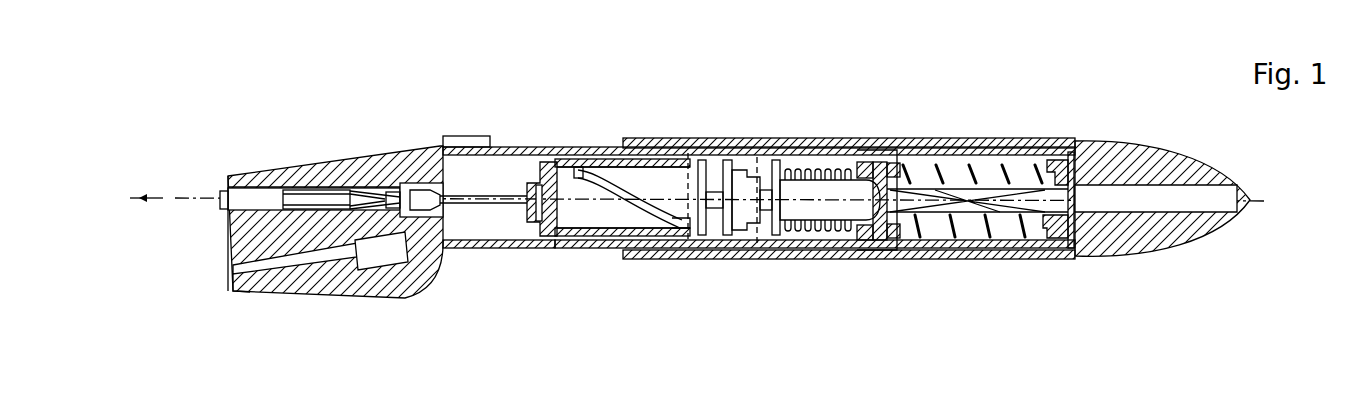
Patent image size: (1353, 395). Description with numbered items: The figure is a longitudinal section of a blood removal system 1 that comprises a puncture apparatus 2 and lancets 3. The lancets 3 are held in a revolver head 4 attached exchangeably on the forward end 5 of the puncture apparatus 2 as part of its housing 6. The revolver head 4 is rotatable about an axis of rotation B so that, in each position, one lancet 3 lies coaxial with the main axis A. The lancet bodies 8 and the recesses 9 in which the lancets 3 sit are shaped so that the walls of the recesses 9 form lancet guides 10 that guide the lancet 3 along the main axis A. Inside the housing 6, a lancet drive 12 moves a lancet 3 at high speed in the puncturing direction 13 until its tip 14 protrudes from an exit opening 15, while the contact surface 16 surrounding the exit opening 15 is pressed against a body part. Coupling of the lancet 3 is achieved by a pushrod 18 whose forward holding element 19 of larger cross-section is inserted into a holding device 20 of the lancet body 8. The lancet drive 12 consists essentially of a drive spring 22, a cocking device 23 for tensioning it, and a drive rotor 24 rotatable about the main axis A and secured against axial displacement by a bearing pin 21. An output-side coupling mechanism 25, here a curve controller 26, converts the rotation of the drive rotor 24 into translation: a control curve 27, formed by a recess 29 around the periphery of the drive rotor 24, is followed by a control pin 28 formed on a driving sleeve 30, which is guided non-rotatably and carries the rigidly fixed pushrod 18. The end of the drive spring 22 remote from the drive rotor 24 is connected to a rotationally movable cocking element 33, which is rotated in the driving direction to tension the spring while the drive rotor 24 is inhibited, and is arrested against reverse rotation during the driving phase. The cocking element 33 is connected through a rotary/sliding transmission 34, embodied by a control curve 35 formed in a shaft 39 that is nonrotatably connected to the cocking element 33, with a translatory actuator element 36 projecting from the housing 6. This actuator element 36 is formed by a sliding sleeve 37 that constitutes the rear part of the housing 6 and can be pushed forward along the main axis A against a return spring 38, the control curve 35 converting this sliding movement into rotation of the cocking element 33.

The blood removal system 1 is at (714, 125).
The puncture apparatus 2 is at (853, 262).
The lancets 3 is at (293, 184).
The revolver head 4 is at (425, 285).
The forward end 5 is at (453, 167).
The housing 6 is at (558, 150).
The lancet body 8 is at (311, 188).
The recesses 9 is at (226, 270).
The lancet guides 10 is at (232, 278).
The lancet drive 12 is at (843, 160).
The puncturing direction 13 is at (162, 197).
The tip 14 is at (255, 173).
The exit opening 15 is at (213, 207).
The contact surface 16 is at (222, 183).
The pushrod 18 is at (500, 190).
The holding element 19 is at (397, 172).
The holding device 20 is at (355, 167).
The bearing pin 21 is at (717, 236).
The drive spring 22 is at (815, 170).
The cocking device 23 is at (958, 175).
The drive rotor 24 is at (760, 190).
The output-side coupling mechanism 25 is at (601, 140).
The curve controller 26 is at (633, 185).
The control curve 27 is at (648, 213).
The control pin 28 is at (677, 222).
The recess 29 is at (694, 185).
The driving sleeve 30 is at (583, 234).
The cocking element 33 is at (880, 178).
The rotary/sliding transmission 34 is at (1035, 226).
The control curve 35 is at (1022, 190).
The actuator element 36 is at (1185, 249).
The sliding sleeve 37 is at (912, 262).
The return spring 38 is at (950, 238).
The shaft 39 is at (1005, 232).
The main axis A is at (1095, 205).
The axis of rotation B is at (498, 212).